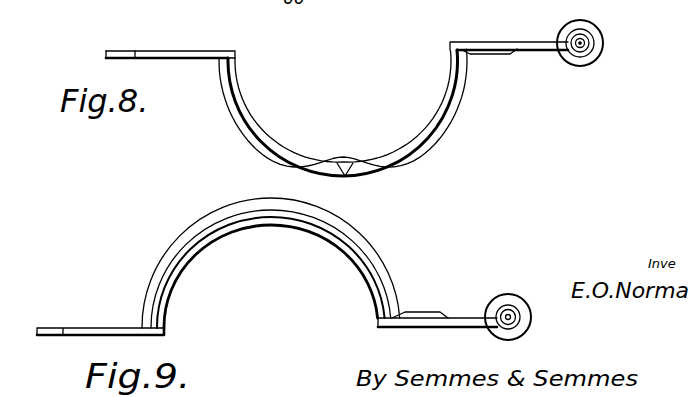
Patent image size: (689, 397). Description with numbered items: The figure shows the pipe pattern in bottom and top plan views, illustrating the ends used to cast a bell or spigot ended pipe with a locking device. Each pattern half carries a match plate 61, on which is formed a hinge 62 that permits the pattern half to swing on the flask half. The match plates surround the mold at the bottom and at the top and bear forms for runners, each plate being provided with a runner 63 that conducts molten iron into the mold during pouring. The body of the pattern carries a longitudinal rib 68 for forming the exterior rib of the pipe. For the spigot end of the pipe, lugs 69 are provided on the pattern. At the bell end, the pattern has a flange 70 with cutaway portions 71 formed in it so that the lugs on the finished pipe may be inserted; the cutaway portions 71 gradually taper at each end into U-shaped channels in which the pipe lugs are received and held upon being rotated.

In FIG. 8, the match plate 61 is at (137, 51).
In FIG. 9, the match plate 61 is at (78, 327).
In FIG. 8, the hinge 62 is at (583, 30).
In FIG. 8, the runner 63 is at (507, 57).
In FIG. 9, the runner 63 is at (415, 313).
In FIG. 8, the longitudinal rib 68 is at (346, 178).
In FIG. 8, the lug 69 is at (430, 130).
In FIG. 9, the flange 70 is at (353, 240).
In FIG. 9, the cutaway portion 71 is at (316, 203).